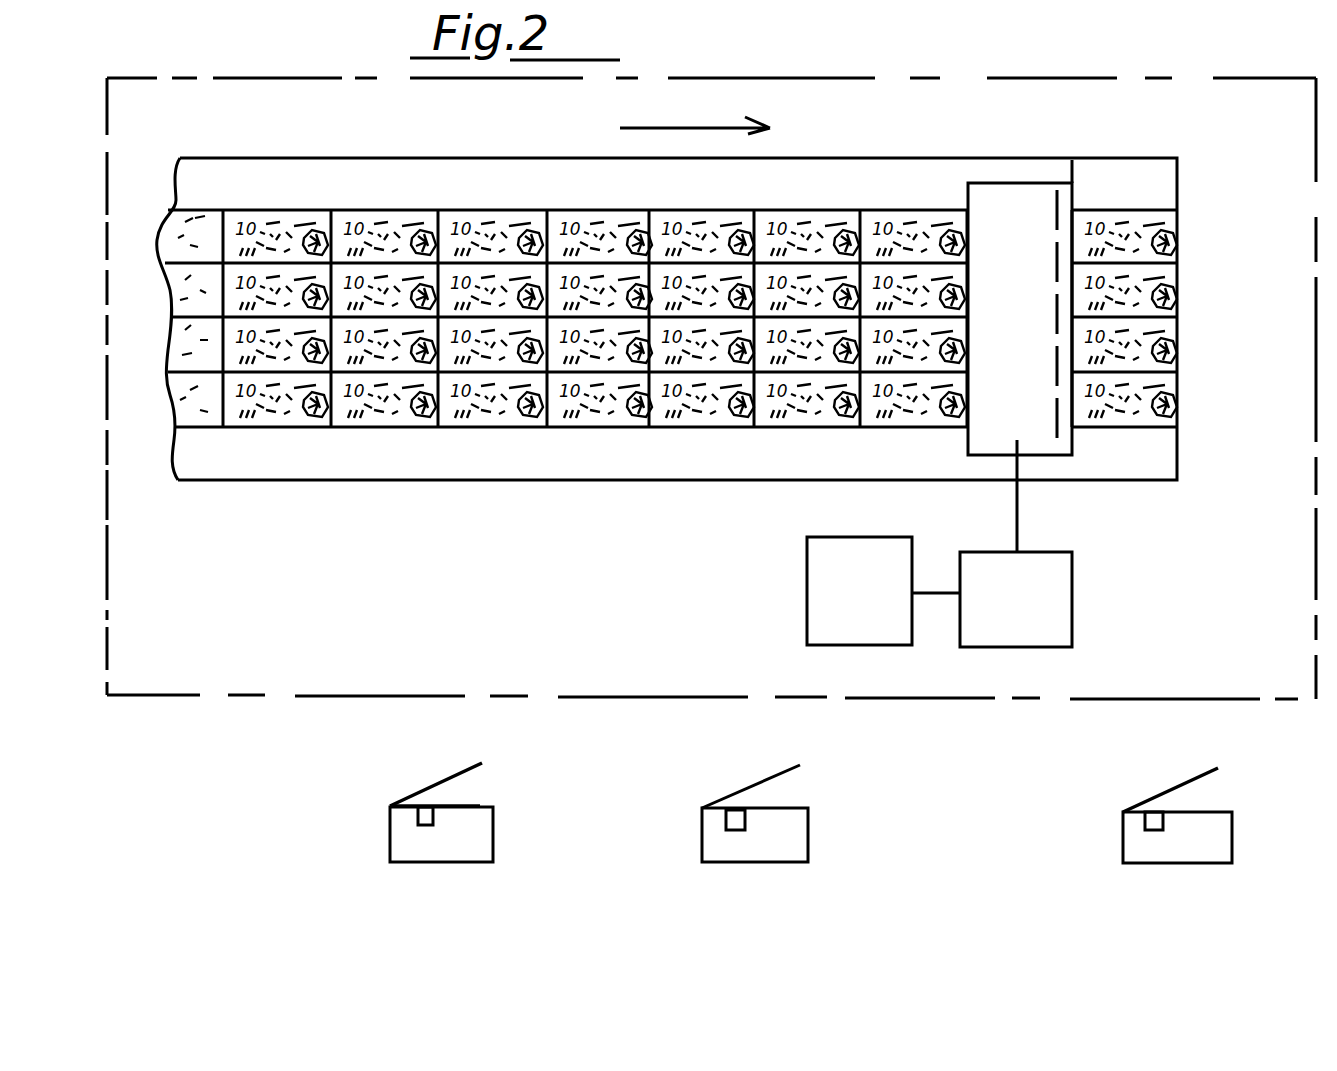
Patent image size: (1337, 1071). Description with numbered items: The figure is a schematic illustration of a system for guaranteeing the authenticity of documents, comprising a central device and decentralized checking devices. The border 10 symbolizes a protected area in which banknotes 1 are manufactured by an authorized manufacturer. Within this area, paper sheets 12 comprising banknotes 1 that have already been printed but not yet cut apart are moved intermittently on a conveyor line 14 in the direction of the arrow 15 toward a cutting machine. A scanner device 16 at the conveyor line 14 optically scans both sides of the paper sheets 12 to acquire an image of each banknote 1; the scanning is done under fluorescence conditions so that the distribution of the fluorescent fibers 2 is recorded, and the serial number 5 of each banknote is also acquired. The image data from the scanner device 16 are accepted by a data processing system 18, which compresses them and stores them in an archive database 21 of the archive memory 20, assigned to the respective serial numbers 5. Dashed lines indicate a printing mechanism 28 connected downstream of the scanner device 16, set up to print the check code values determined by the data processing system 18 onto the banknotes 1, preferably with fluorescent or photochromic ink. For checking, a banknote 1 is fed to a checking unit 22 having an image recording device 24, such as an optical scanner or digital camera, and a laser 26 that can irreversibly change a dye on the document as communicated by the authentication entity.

The banknote 1 is at (412, 208).
The fluorescent fibers 2 is at (282, 222).
The serial number 5 is at (333, 432).
The border 10 is at (1022, 68).
The paper sheets 12 is at (810, 420).
The conveyor line 14 is at (892, 190).
The arrow 15 is at (703, 125).
The scanner device 16 is at (998, 428).
The data processing system 18 is at (1052, 622).
The archive memory 20 is at (807, 643).
The archive database 21 is at (752, 627).
The checking unit 22 is at (505, 835).
The image recording device 24 is at (460, 788).
The laser 26 is at (418, 812).
The printing mechanism 28 is at (1078, 165).